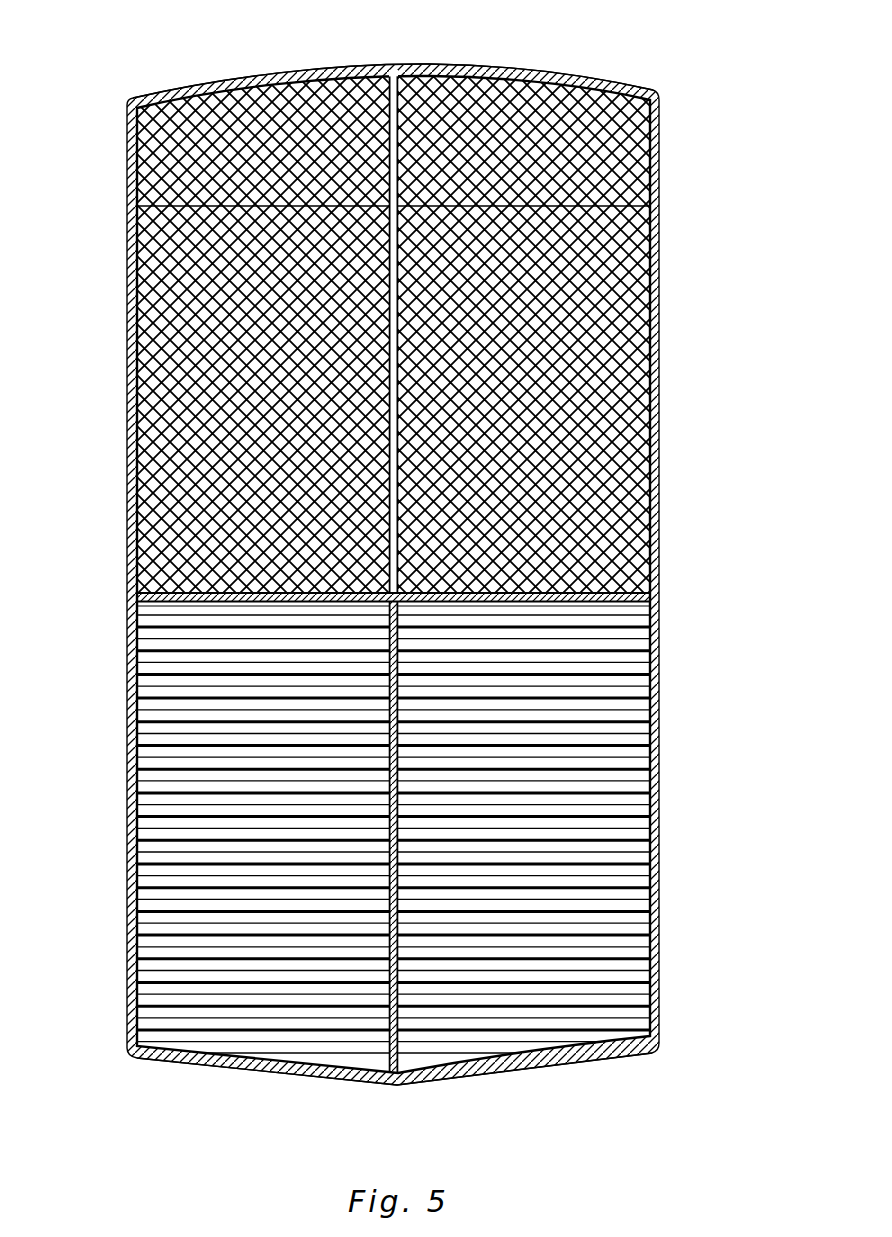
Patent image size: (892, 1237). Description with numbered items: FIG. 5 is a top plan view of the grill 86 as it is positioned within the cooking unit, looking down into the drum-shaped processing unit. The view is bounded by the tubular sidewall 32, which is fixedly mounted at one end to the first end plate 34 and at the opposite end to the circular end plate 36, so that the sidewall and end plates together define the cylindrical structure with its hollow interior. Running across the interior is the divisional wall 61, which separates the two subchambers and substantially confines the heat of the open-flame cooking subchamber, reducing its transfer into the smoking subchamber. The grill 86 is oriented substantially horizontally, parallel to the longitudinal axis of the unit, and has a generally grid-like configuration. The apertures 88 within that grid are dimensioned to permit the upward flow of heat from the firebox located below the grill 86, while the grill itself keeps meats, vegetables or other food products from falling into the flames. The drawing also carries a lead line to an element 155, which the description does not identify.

The circular end plate 36 is at (445, 64).
The mesh screen 155 is at (628, 460).
The divisional wall 61 is at (650, 608).
The sidewall 32 is at (128, 660).
The apertures 88 is at (150, 837).
The grill 86 is at (638, 855).
The first end plate 34 is at (425, 1079).